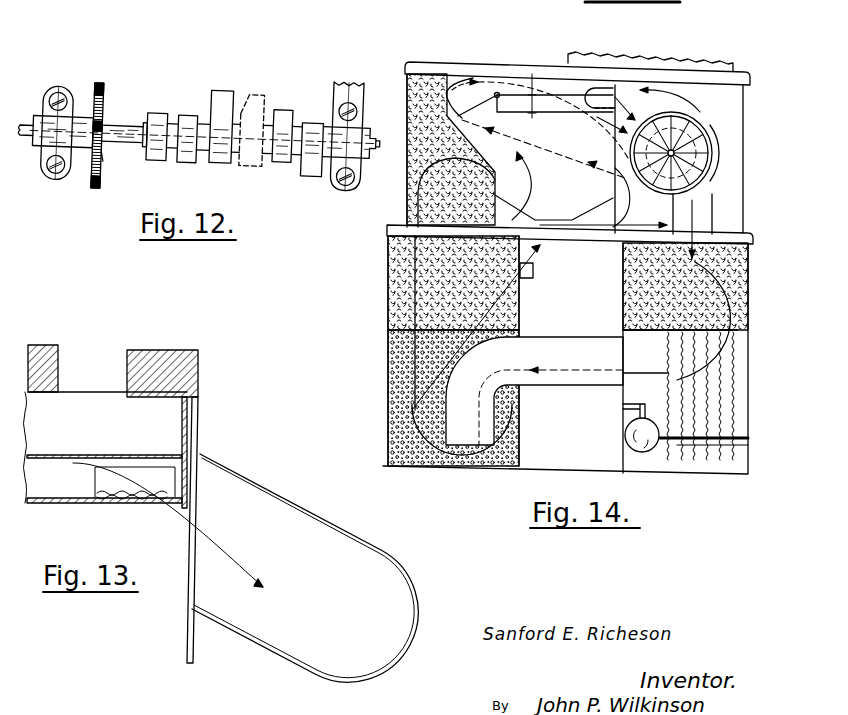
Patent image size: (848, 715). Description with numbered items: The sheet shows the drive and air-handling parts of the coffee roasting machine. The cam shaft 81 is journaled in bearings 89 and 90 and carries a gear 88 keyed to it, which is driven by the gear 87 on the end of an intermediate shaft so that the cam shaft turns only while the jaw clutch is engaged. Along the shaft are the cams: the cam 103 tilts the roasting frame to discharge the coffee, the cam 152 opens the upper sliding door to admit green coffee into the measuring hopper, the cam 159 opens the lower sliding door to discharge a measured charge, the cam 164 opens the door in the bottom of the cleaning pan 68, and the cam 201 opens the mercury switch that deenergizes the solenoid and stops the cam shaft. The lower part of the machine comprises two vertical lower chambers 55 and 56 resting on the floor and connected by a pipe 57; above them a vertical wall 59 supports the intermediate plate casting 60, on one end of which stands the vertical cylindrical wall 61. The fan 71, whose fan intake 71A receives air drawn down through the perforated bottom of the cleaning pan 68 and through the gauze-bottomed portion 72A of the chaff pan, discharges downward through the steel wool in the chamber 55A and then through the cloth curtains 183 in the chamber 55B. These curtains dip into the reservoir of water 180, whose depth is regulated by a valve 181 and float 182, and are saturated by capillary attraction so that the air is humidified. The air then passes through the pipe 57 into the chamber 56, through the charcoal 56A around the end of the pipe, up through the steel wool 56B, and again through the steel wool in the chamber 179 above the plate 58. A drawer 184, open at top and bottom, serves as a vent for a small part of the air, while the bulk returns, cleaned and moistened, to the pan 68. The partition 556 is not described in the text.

In FIG. 12, the cam shaft 81 is at (123, 124).
In FIG. 12, the gear 87 is at (111, 165).
In FIG. 12, the gear 88 is at (104, 125).
In FIG. 12, the bearing 89 is at (56, 123).
In FIG. 12, the bearing 90 is at (332, 136).
In FIG. 12, the cam 103 is at (149, 126).
In FIG. 12, the cam 152 is at (237, 115).
In FIG. 12, the cam 159 is at (287, 127).
In FIG. 12, the cam 164 is at (183, 151).
In FIG. 12, the cam 201 is at (309, 161).
In FIG. 14, the lower chamber 55 is at (748, 297).
In FIG. 14, the chamber 55A is at (629, 289).
In FIG. 14, the chamber 55B is at (747, 393).
In FIG. 14, the partition 556 is at (680, 338).
In FIG. 14, the lower chamber 56 is at (395, 265).
In FIG. 14, the charcoal filtering substance 56A is at (393, 367).
In FIG. 14, the steel wool filtering material 56B is at (395, 283).
In FIG. 14, the pipe 57 is at (591, 339).
In FIG. 14, the plate 58 is at (749, 241).
In FIG. 14, the vertical wall 59 is at (745, 125).
In FIG. 13, the intermediate plate casting 60 is at (167, 352).
In FIG. 14, the intermediate plate casting 60 is at (529, 72).
In FIG. 14, the vertical cylindrical wall 61 is at (733, 70).
In FIG. 14, the cleaning pan 68 is at (536, 99).
In FIG. 14, the fan 71 is at (702, 130).
In FIG. 13, the fan intake 71A is at (245, 568).
In FIG. 13, the partitioned portion of chaff pan 72A is at (143, 482).
In FIG. 14, the chamber 179 is at (418, 192).
In FIG. 14, the reservoir of water 180 is at (645, 446).
In FIG. 14, the valve 181 is at (648, 394).
In FIG. 14, the float 182 is at (626, 442).
In FIG. 14, the cloth curtains 183 is at (645, 363).
In FIG. 14, the drawer 184 is at (482, 327).